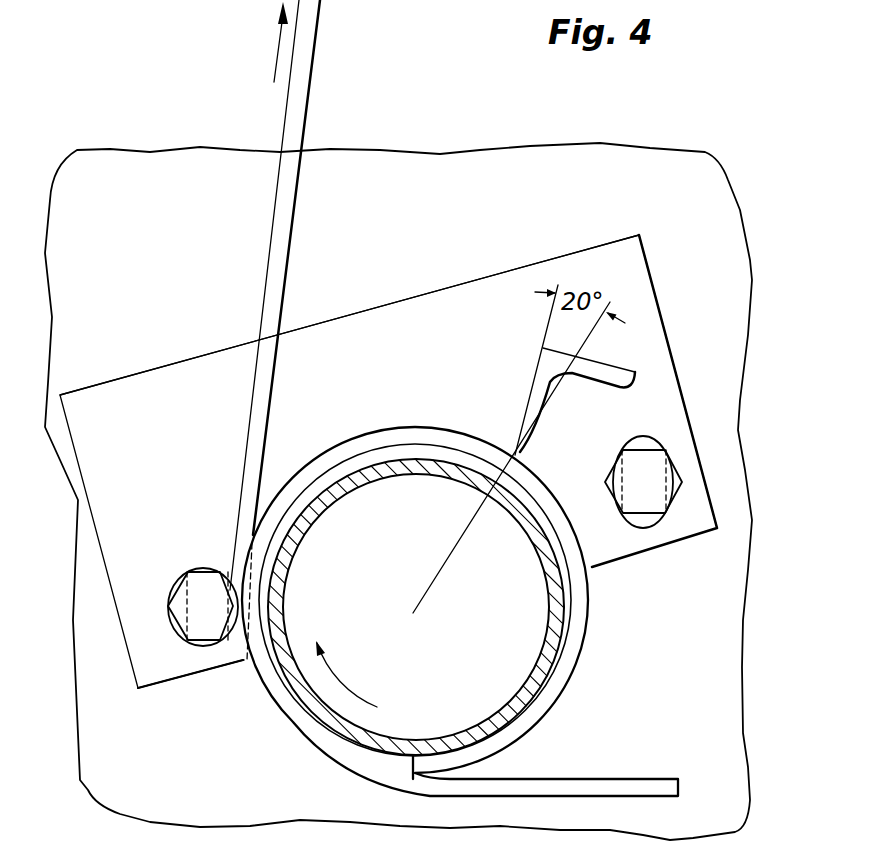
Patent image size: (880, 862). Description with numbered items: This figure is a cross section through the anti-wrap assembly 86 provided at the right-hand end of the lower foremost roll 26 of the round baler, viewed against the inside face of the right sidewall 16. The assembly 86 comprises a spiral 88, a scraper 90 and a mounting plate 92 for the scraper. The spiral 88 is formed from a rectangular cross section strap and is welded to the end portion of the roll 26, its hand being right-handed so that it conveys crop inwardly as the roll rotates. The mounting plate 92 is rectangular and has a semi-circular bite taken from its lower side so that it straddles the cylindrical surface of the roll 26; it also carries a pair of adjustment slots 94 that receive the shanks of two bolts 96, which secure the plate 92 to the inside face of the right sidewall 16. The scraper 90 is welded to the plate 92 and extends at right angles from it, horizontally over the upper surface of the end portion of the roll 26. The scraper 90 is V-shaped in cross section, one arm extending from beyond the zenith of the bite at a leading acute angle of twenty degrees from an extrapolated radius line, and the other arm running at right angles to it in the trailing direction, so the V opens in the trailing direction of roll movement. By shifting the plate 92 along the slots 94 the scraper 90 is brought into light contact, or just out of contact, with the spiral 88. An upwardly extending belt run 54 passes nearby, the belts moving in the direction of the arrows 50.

The right sidewall 16 is at (648, 192).
The lower foremost roll 26 is at (558, 622).
The arrows 50 is at (276, 50).
The upwardly extending belt run 54 is at (287, 112).
The anti-wrap assembly 86 is at (557, 258).
The spiral 88 is at (565, 675).
The scraper 90 is at (628, 368).
The mounting plate 92 is at (470, 349).
The adjustment slots 94 is at (203, 567).
The bolts 96 is at (195, 602).